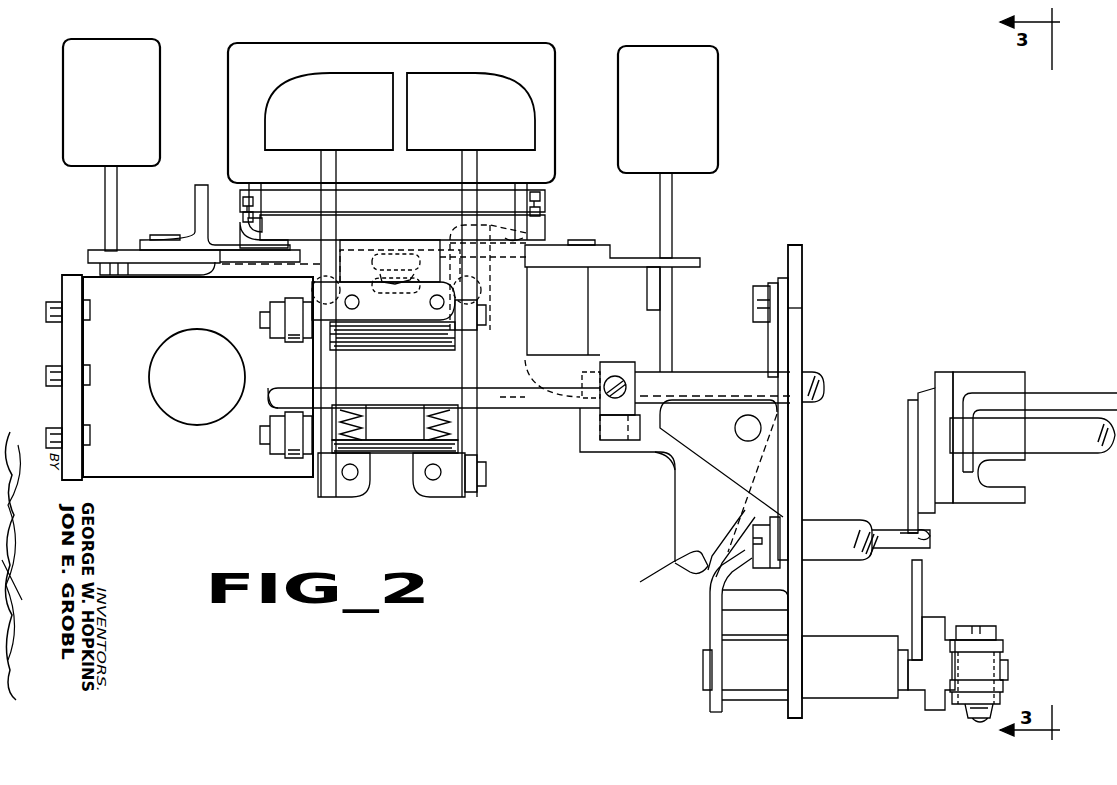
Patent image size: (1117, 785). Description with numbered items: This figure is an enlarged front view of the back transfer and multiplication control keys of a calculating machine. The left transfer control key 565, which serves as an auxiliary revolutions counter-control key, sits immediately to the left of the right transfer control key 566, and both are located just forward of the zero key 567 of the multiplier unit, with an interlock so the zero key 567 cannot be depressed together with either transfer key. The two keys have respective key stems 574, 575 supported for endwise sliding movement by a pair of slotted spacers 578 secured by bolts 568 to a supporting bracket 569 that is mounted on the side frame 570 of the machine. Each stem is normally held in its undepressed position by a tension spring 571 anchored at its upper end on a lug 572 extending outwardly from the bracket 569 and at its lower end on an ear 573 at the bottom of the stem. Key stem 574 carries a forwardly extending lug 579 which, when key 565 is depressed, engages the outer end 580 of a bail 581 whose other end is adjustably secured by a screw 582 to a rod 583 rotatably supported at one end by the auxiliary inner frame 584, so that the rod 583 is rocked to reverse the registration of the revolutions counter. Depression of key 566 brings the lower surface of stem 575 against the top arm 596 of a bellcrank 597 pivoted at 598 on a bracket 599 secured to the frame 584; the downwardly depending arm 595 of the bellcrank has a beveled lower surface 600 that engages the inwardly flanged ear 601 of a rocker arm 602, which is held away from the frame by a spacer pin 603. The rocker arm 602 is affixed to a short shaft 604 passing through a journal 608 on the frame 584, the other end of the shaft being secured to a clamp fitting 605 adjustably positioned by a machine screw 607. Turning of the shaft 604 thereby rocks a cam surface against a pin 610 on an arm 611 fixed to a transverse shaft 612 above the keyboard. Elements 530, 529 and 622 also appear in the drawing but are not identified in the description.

The block 530 is at (104, 50).
The zero key 567 is at (348, 48).
The left transfer control key 565 is at (329, 111).
The right transfer control key 566 is at (471, 111).
The block 529 is at (676, 50).
The key stem 574 is at (340, 198).
The key stem 575 is at (466, 200).
The lug 572 is at (424, 280).
The top arm 596 is at (503, 273).
The bolts 568 is at (268, 312).
The side frame 570 is at (60, 345).
The outer end 580 is at (300, 376).
The lug 579 is at (330, 353).
The bail 581 is at (434, 386).
The screw 582 is at (612, 372).
The rod 583 is at (694, 380).
The auxiliary inner frame 584 is at (800, 335).
The supporting bracket 569 is at (150, 460).
The tension spring 571 is at (436, 424).
The ear 573 is at (335, 500).
The slotted spacers 578 is at (398, 452).
The bellcrank 597 is at (657, 476).
The pivot 598 is at (748, 428).
The bracket 599 is at (721, 476).
The downwardly depending arm 595 is at (721, 539).
The beveled lower surface 600 is at (668, 573).
The inwardly flanged ear 601 is at (746, 563).
The rocker arm 602 is at (712, 628).
The spacer pin 603 is at (745, 604).
The short shaft 604 is at (704, 672).
The journal 608 is at (845, 690).
The arm 611 is at (922, 598).
The pin 610 is at (925, 625).
The machine screw 607 is at (990, 630).
The clamp fitting 605 is at (995, 658).
The bar 622 is at (1033, 400).
The shaft 612 is at (1088, 444).